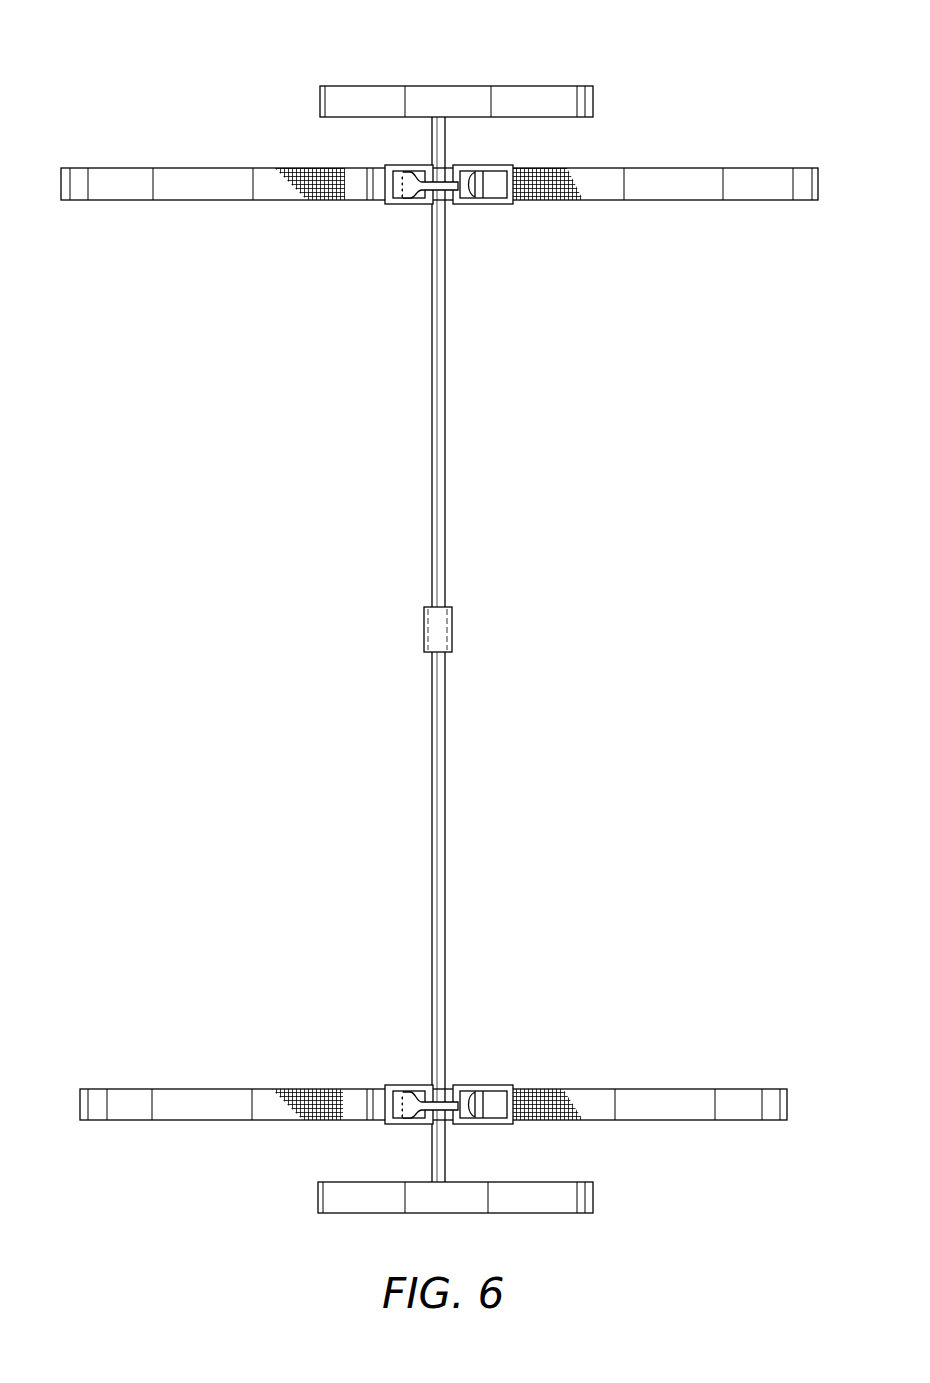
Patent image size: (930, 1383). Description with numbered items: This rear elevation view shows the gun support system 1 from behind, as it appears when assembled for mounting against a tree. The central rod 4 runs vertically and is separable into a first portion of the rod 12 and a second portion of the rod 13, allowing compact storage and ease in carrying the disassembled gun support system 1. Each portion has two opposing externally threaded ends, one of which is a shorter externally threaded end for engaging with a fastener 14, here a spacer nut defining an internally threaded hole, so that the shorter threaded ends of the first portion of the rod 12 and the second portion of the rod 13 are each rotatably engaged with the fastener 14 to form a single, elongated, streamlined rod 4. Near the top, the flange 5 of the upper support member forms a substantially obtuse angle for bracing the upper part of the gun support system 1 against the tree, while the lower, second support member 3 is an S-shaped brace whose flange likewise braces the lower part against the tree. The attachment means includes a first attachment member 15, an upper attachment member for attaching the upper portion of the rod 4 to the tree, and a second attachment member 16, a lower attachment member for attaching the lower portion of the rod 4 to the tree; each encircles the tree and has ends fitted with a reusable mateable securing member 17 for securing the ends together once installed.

The gun support system 1 is at (121, 113).
The second support member 3 is at (533, 1213).
The rod 4 is at (448, 649).
The flange 5 is at (525, 86).
The first portion of the rod 12 is at (445, 470).
The second portion of the rod 13 is at (443, 825).
The fastener 14 is at (452, 628).
The first attachment member 15 is at (668, 172).
The second attachment member 16 is at (653, 1088).
The securing member 17 is at (502, 205).